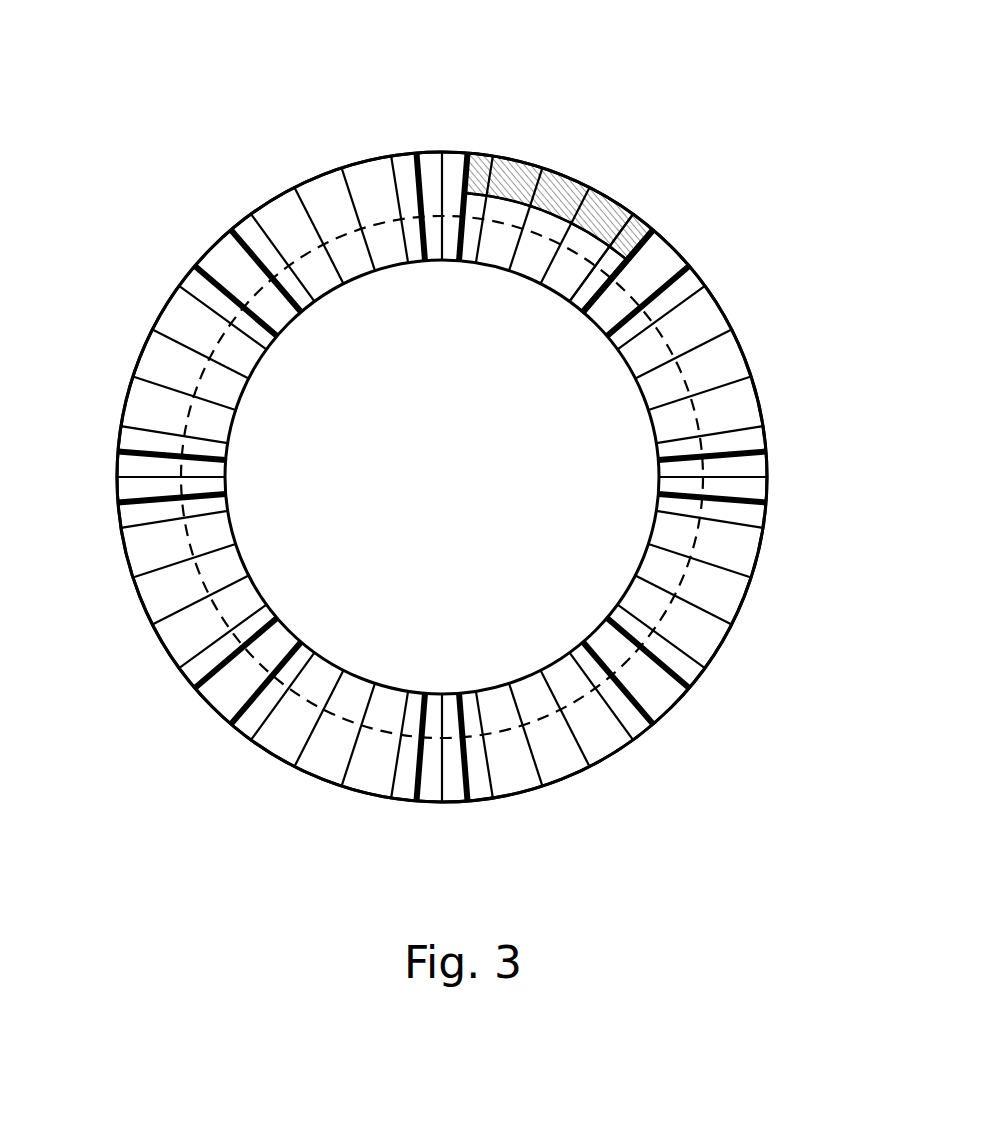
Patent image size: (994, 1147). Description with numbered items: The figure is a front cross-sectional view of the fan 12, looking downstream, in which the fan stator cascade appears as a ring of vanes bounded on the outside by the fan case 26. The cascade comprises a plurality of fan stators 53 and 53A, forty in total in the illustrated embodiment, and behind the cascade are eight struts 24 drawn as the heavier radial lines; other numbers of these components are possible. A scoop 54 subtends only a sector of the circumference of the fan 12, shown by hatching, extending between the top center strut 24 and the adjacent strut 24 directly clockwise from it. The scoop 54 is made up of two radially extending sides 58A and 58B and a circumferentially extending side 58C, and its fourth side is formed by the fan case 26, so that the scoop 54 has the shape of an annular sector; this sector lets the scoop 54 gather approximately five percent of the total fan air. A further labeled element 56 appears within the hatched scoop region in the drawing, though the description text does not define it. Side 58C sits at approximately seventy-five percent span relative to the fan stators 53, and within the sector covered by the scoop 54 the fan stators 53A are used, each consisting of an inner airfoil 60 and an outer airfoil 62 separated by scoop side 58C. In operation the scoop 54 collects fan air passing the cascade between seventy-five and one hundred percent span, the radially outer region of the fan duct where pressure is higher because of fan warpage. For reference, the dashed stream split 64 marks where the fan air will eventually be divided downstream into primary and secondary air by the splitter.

The fan 12 is at (729, 81).
The struts 24 is at (414, 164).
The fan case 26 is at (759, 404).
The fan stators 53 is at (209, 268).
The fan stators 53A is at (590, 284).
The scoop 54 is at (480, 175).
The hatched coating region 56 is at (510, 196).
The radially extending side 58A is at (469, 164).
The radially extending side 58B is at (642, 237).
The circumferentially extending side 58C is at (600, 244).
The inner airfoil 60 is at (514, 258).
The outer airfoil 62 is at (559, 187).
The stream split 64 is at (683, 373).